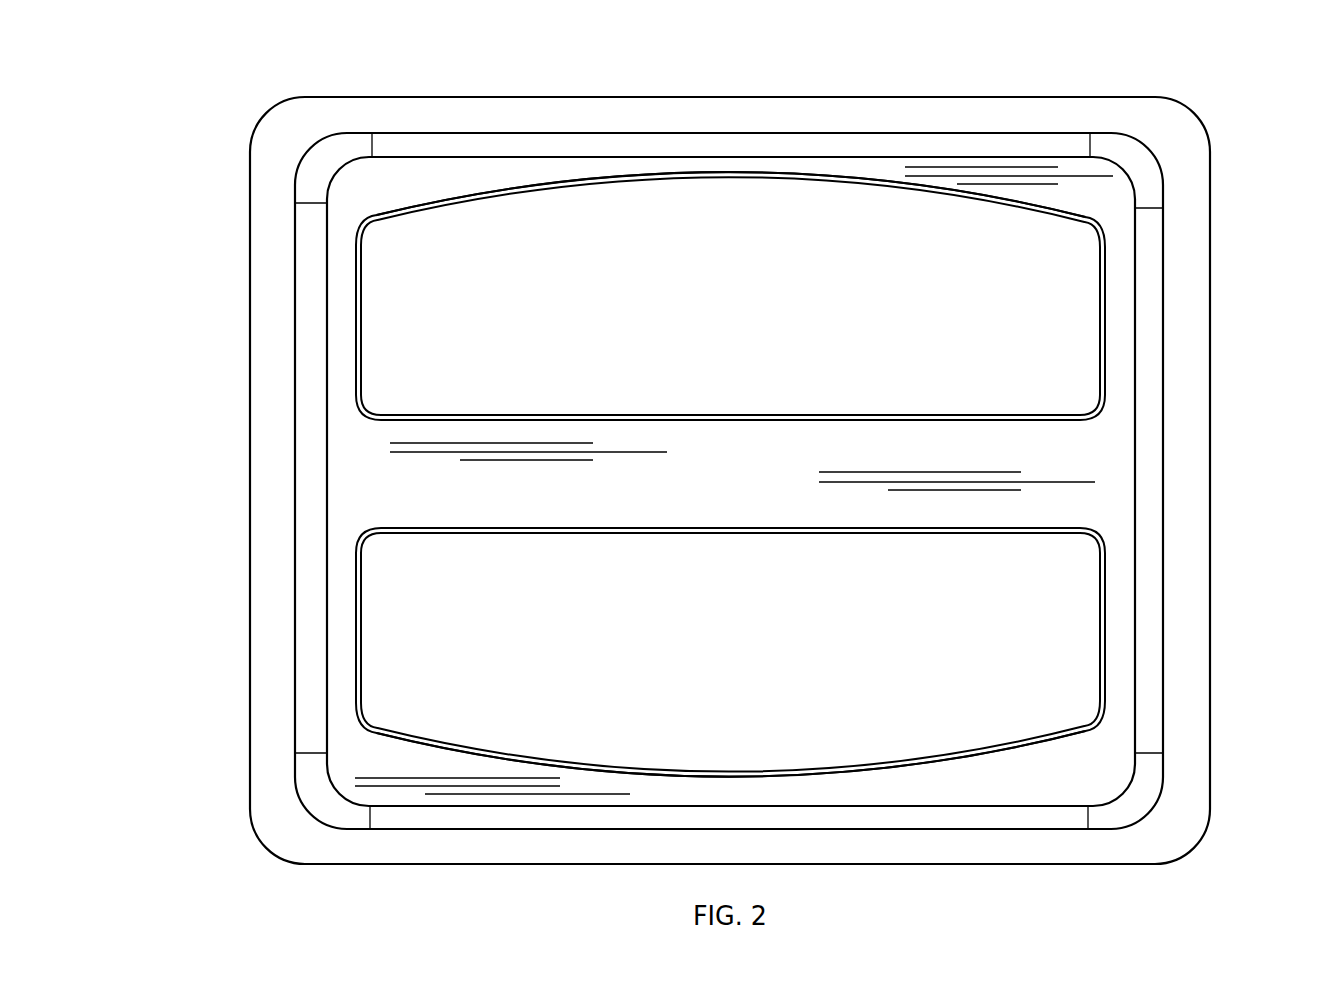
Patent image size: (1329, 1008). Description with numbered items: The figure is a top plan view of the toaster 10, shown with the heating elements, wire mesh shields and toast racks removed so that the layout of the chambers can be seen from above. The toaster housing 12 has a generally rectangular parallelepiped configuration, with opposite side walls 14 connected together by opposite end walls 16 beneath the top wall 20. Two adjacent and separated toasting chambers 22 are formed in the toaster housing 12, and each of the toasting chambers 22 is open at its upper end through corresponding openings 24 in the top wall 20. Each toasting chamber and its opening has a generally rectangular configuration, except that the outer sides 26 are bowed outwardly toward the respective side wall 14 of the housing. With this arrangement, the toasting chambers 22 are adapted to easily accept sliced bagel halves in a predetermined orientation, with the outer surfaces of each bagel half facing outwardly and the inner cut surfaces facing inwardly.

The toaster 10 is at (1215, 93).
The toaster housing 12 is at (1218, 459).
The side walls 14 is at (428, 98).
The end walls 16 is at (262, 549).
The top wall 20 is at (350, 465).
The toasting chambers 22 is at (493, 304).
The openings 24 is at (773, 415).
The outer sides 26 is at (830, 182).